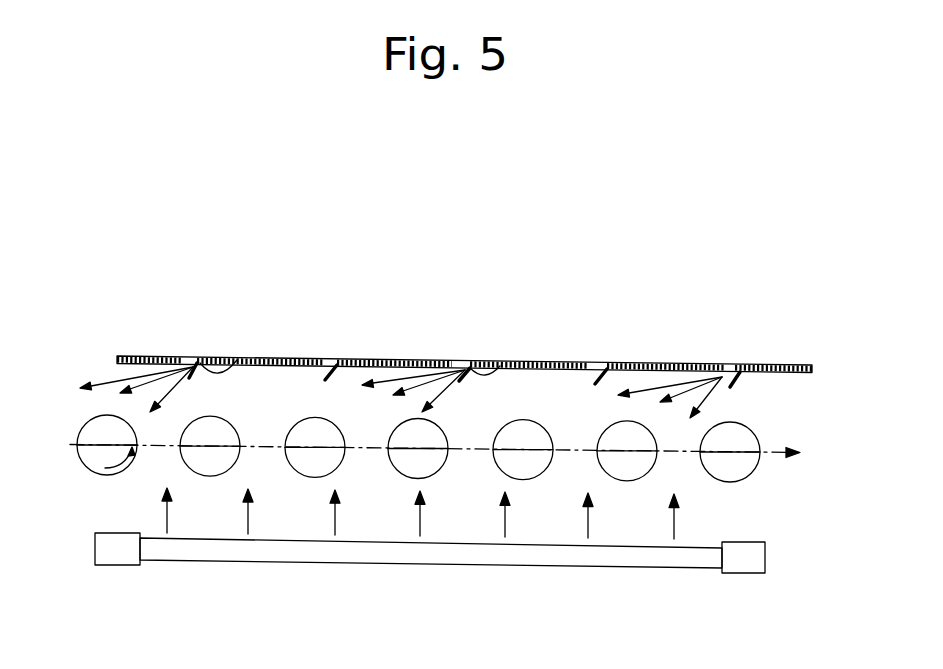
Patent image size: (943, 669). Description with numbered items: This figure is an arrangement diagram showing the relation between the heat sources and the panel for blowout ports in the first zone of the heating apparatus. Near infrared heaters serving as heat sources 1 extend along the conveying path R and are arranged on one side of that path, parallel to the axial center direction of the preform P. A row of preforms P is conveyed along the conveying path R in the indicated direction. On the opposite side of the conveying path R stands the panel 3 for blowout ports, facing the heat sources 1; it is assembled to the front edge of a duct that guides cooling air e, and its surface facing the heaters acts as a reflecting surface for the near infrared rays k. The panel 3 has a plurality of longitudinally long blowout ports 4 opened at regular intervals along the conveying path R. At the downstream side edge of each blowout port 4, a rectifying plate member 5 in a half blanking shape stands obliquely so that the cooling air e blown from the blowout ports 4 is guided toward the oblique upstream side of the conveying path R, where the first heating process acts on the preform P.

The heat sources 1 is at (347, 566).
The panel for blowout ports 3 is at (540, 365).
The blowout ports 4 is at (337, 362).
The rectifying plate member 5 is at (237, 358).
The cooling air e is at (110, 383).
The near infrared rays k is at (165, 521).
The preform P is at (290, 466).
The conveying path R is at (775, 450).